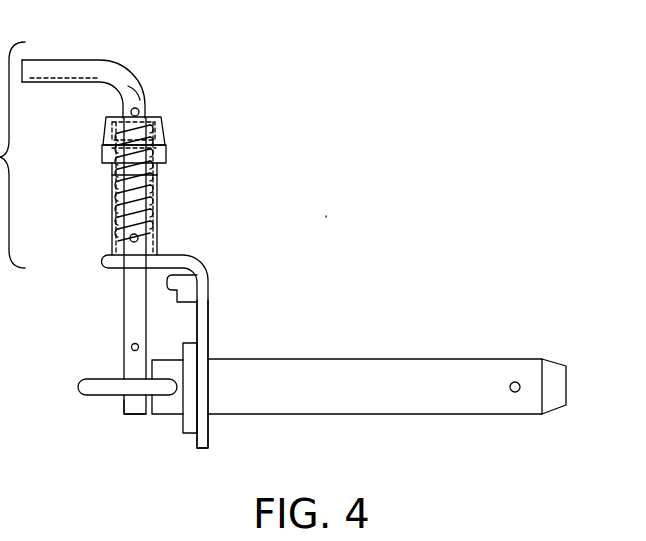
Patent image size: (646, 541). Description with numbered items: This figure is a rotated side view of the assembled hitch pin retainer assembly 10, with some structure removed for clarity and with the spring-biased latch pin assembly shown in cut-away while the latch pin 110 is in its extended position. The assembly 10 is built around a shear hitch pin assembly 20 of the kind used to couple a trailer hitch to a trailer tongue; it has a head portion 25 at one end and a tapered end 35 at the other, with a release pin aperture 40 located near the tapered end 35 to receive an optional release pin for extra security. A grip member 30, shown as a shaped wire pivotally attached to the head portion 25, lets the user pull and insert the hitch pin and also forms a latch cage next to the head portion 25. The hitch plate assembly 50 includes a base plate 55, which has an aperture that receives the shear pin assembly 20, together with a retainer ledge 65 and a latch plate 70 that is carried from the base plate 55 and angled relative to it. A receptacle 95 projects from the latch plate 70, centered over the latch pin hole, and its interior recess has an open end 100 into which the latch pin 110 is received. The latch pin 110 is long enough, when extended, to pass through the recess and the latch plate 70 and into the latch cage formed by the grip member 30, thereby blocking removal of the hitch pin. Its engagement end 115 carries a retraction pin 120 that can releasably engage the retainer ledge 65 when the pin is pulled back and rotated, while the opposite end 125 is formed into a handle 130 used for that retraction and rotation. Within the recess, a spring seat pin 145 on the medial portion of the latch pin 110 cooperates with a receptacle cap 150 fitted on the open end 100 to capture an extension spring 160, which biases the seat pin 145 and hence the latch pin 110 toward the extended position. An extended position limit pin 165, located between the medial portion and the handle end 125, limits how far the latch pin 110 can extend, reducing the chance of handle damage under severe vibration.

The hitch pin retainer assembly 10 is at (324, 219).
The shear hitch pin assembly 20 is at (301, 358).
The head portion 25 is at (185, 434).
The grip member 30 is at (79, 389).
The tapered end 35 is at (558, 362).
The release pin aperture 40 is at (516, 393).
The hitch plate assembly 50 is at (211, 306).
The base plate 55 is at (209, 428).
The retainer ledge 65 is at (208, 271).
The latch plate 70 is at (176, 253).
The receptacle 95 is at (112, 192).
The open end 100 is at (103, 142).
The latch pin 110 is at (5, 380).
The engagement end 115 is at (125, 410).
The retraction pin 120 is at (134, 343).
The opposite end 125 is at (146, 92).
The handle 130 is at (50, 59).
The spring seat pin 145 is at (110, 247).
The receptacle cap 150 is at (104, 138).
The extension spring 160 is at (137, 195).
The extended position limit pin 165 is at (140, 111).